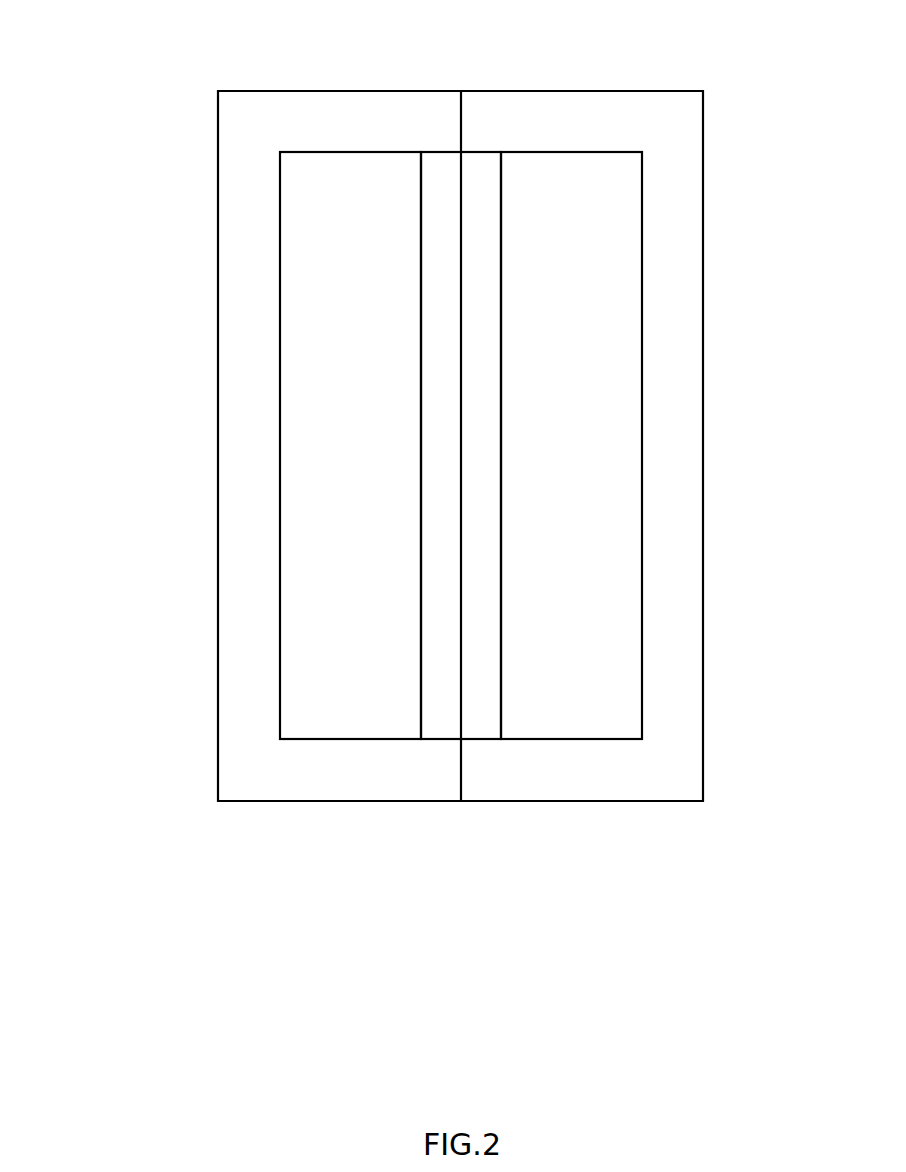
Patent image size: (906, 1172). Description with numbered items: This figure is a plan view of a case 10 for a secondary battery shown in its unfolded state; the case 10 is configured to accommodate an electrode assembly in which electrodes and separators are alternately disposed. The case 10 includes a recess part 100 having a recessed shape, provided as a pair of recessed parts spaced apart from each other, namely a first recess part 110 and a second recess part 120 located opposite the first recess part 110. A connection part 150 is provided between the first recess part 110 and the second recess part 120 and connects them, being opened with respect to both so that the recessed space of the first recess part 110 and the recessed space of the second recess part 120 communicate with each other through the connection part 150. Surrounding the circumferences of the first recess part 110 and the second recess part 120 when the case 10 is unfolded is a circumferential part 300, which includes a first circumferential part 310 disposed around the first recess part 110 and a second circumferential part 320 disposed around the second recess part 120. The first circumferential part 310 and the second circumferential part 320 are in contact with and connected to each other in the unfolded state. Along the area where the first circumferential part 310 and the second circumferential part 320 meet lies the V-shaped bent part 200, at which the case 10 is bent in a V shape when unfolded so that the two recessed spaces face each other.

The case 10 is at (178, 274).
The recess part 100 is at (100, 795).
The first recess part 110 is at (348, 723).
The second recess part 120 is at (570, 723).
The connection part 150 is at (443, 723).
The V-shaped bent part 200 is at (463, 118).
The circumferential part 300 is at (100, 695).
The first circumferential part 310 is at (348, 105).
The second circumferential part 320 is at (682, 455).